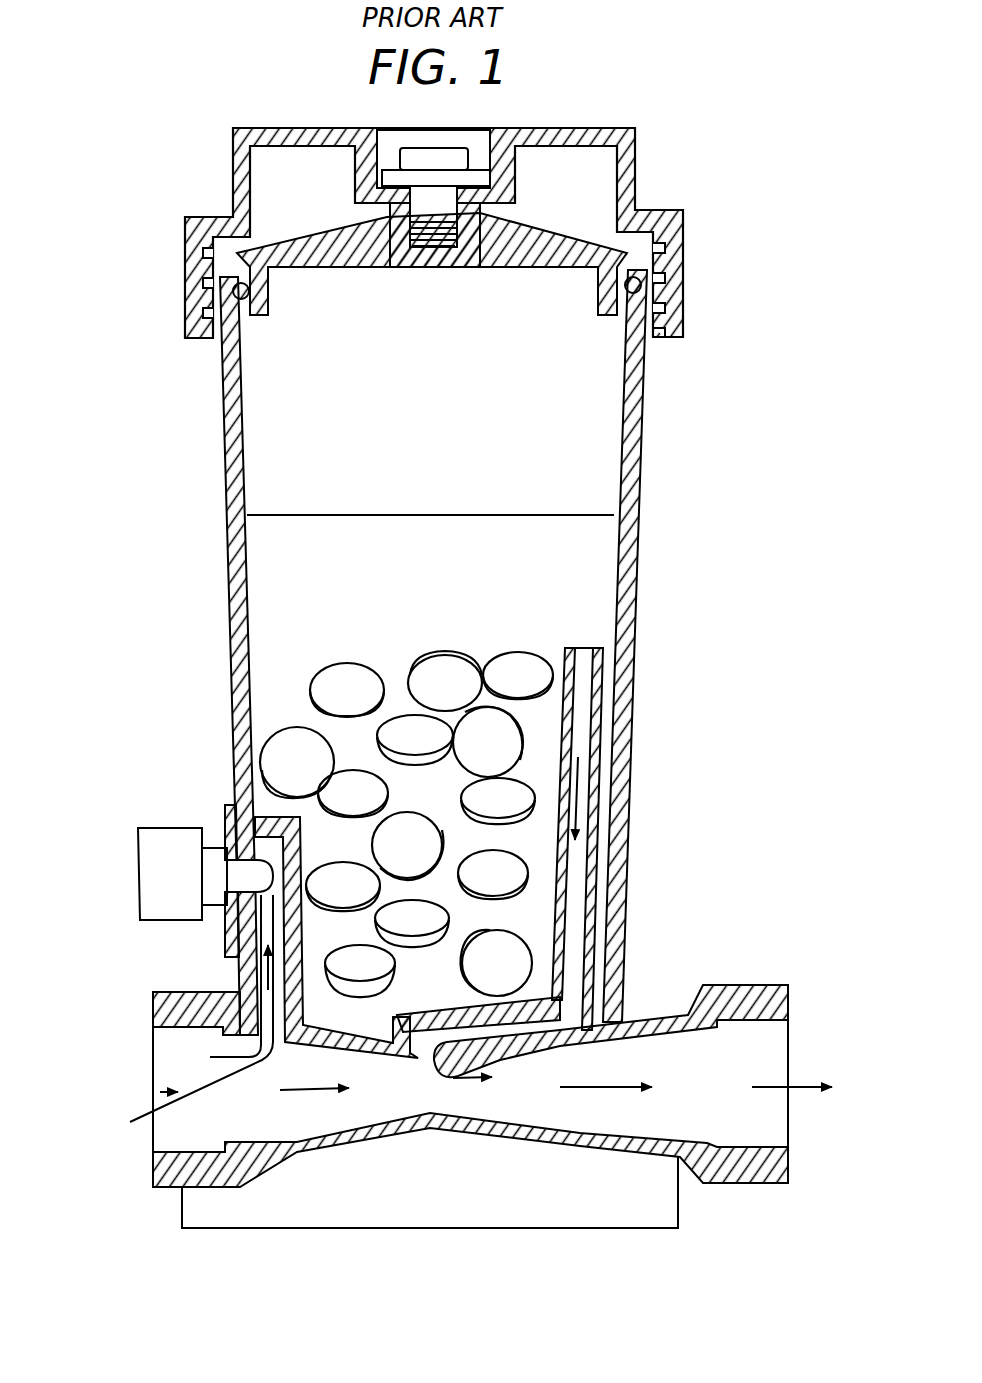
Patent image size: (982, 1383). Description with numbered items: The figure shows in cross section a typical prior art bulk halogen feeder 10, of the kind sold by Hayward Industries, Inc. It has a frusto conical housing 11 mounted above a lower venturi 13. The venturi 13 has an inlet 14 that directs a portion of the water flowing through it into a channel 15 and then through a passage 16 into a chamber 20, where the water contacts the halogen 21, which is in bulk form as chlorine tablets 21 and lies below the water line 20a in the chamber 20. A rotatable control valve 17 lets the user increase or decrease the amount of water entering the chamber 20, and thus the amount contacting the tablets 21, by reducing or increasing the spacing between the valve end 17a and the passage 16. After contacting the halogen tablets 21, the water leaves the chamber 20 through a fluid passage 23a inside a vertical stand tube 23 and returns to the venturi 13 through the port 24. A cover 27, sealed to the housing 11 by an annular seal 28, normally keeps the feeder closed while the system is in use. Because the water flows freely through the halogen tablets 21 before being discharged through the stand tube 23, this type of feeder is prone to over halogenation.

The bulk halogen feeder 10 is at (145, 378).
The frusto conical housing 11 is at (232, 598).
The lower venturi 13 is at (170, 1165).
The inlet 14 is at (185, 1020).
The channel 15 is at (263, 923).
The passage 16 is at (232, 838).
The rotatable control valve 17 is at (148, 850).
The valve end 17a is at (265, 925).
The chamber 20 is at (441, 439).
The water line 20a is at (560, 514).
The halogen tablets 21 is at (438, 673).
The vertical stand tube 23 is at (588, 648).
The fluid passage 23a is at (583, 723).
The port 24 is at (437, 1040).
The cover 27 is at (237, 178).
The annular seal 28 is at (236, 285).